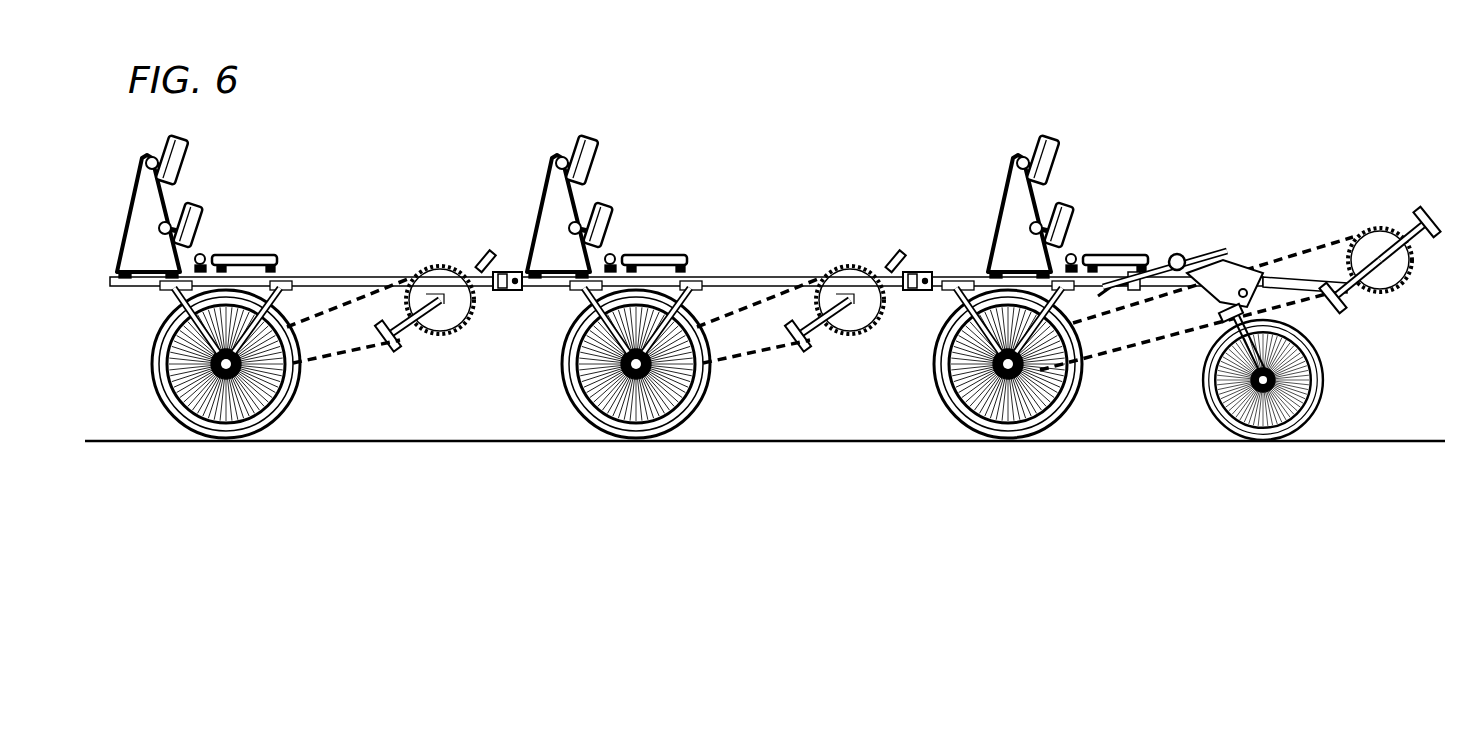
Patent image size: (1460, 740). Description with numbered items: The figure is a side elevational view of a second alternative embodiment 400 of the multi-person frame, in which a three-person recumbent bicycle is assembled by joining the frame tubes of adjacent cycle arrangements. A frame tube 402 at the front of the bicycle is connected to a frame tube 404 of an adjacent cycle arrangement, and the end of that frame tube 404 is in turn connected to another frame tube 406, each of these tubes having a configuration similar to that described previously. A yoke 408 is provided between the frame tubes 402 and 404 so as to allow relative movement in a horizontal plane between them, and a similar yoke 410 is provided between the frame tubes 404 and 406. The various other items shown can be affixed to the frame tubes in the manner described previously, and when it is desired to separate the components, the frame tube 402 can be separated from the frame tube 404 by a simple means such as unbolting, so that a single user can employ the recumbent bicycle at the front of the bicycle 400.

The alternative embodiment 400 is at (1170, 227).
The frame tube 402 is at (977, 280).
The frame tube 404 is at (733, 277).
The frame tube 406 is at (330, 277).
The yoke 408 is at (913, 277).
The yoke 410 is at (504, 273).